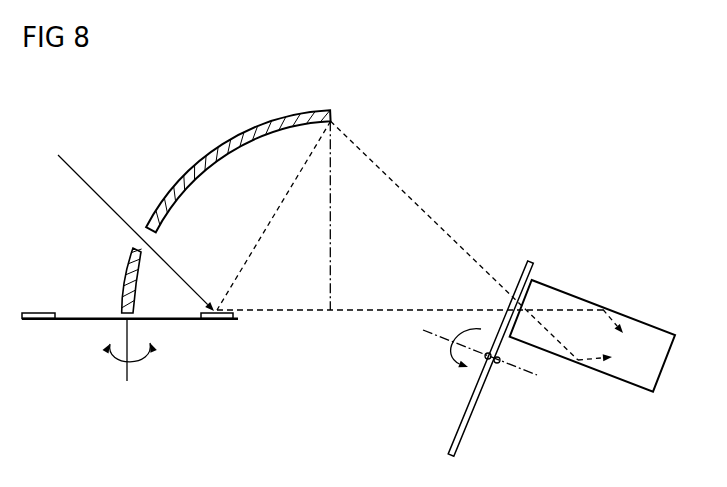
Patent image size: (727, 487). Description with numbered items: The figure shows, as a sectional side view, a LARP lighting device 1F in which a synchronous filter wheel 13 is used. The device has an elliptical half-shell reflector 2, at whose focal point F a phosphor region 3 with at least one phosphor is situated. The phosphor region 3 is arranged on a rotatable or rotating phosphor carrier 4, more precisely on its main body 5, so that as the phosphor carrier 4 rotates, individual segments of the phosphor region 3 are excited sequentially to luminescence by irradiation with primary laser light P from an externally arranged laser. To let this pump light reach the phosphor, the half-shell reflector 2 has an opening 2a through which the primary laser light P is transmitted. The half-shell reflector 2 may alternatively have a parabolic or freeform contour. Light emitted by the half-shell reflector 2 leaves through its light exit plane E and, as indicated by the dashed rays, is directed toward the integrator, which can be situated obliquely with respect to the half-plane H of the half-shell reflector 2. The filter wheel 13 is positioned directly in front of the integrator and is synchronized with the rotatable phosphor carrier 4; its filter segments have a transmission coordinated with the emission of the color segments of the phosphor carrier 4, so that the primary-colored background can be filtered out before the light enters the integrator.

The lighting device 1F is at (535, 72).
The half-shell reflector 2 is at (264, 124).
The opening 2a is at (137, 249).
The phosphor region 3 is at (38, 312).
The phosphor carrier 4 is at (75, 350).
The main body 5 is at (183, 321).
The synchronous filter wheel 13 is at (468, 422).
The primary laser light P is at (90, 185).
The light exit plane E is at (331, 230).
The focal point F is at (218, 289).
The half-plane H is at (366, 312).